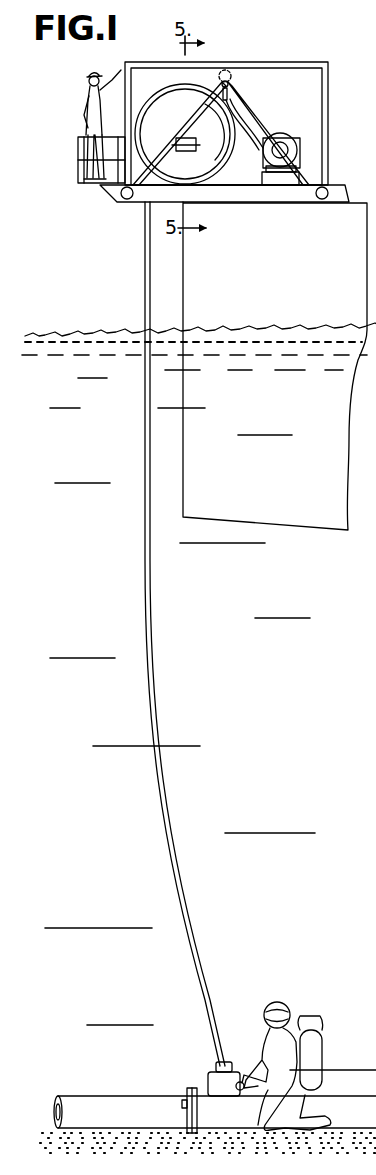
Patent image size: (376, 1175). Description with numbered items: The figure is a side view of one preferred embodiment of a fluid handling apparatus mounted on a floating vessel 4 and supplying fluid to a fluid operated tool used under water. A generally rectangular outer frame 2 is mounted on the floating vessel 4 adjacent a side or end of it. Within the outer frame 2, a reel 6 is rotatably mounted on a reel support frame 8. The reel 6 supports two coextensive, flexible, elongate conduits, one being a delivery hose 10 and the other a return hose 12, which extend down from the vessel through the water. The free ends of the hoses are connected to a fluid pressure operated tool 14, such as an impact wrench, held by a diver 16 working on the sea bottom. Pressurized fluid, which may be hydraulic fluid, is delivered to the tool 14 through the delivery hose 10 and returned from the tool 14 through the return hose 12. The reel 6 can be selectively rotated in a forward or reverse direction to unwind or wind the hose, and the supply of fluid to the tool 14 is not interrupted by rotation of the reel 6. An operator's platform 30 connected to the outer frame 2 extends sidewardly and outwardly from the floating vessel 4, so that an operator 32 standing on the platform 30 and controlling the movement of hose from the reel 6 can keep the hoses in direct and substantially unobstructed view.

The outer frame 2 is at (327, 116).
The floating vessel 4 is at (339, 255).
The reel 6 is at (166, 101).
The reel support frame 8 is at (226, 181).
The delivery hose 10 is at (222, 1058).
The return hose 12 is at (214, 1051).
The fluid pressure operated tool 14 is at (208, 1086).
The diver 16 is at (298, 1060).
The operator's platform 30 is at (76, 183).
The operator 32 is at (88, 106).